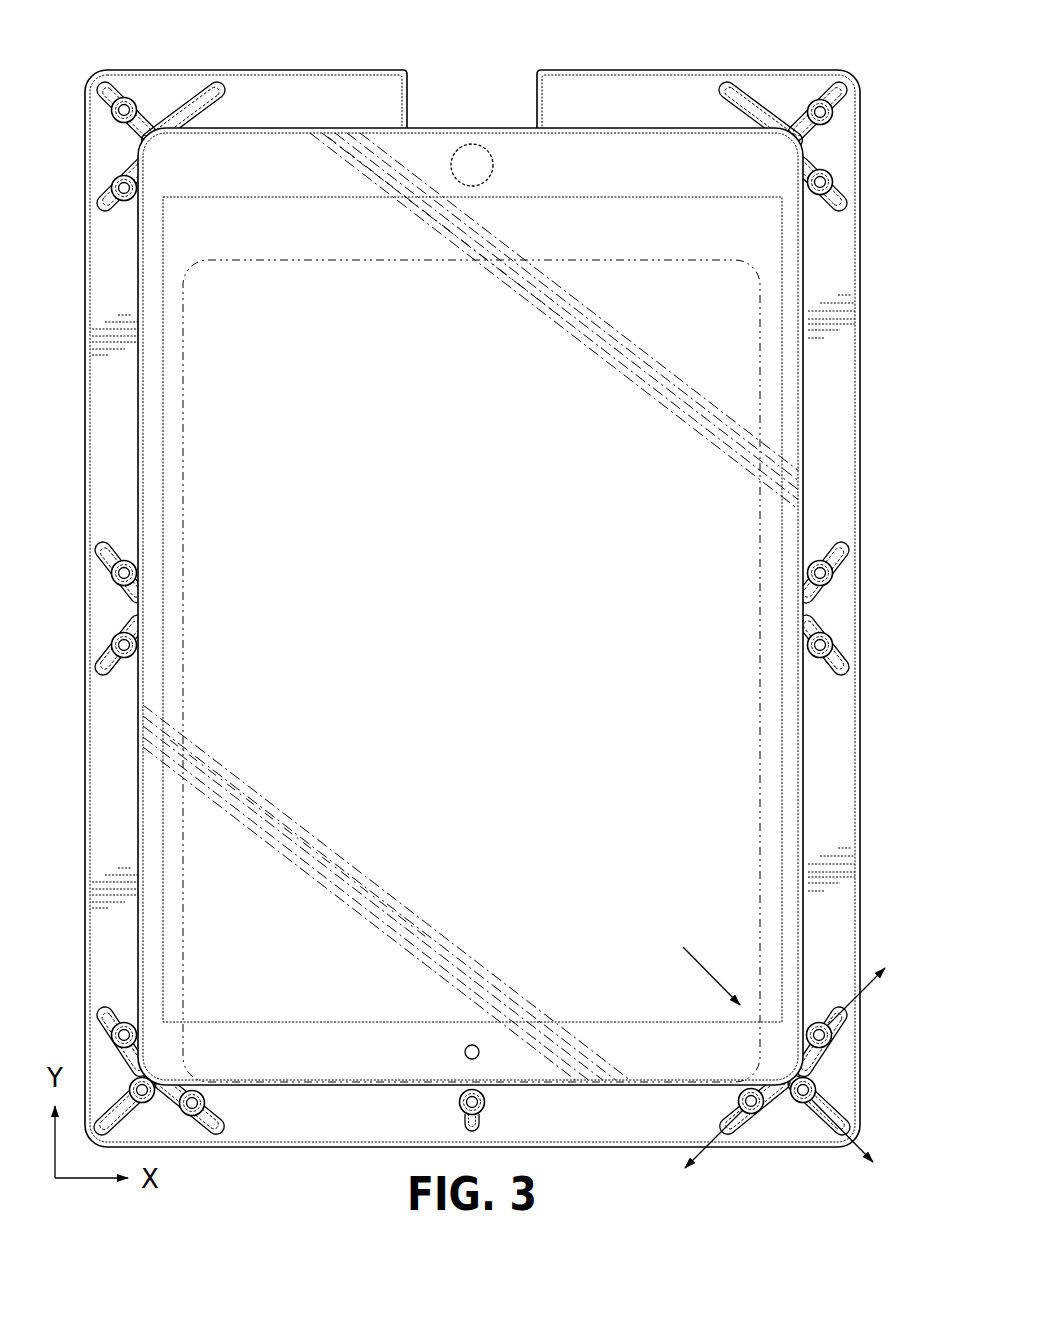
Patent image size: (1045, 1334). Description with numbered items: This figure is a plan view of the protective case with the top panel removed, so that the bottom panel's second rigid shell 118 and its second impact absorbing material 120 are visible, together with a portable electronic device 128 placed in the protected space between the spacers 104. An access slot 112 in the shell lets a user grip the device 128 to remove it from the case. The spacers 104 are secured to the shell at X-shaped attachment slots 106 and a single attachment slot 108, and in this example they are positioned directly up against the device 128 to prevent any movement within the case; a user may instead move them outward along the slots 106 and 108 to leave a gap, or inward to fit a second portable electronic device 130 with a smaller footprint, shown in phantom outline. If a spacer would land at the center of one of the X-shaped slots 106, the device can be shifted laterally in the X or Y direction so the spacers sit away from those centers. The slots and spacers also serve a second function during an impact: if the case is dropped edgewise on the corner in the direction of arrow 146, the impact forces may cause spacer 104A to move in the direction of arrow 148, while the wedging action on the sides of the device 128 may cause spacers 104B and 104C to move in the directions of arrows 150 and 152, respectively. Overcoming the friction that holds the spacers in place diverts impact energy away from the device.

The spacers 104 is at (833, 589).
The spacer 104A is at (820, 1083).
The spacer 104B is at (762, 1118).
The spacer 104C is at (836, 1043).
The X-shaped attachment slots 106 is at (838, 553).
The single attachment slot 108 is at (482, 1125).
The access slot 112 is at (470, 90).
The second rigid shell 118 is at (85, 292).
The second impact absorbing material 120 is at (103, 385).
The portable electronic device 128 is at (808, 410).
The second portable electronic device 130 is at (640, 262).
The arrow 146 is at (718, 968).
The arrow 148 is at (855, 1152).
The arrow 150 is at (703, 1158).
The arrow 152 is at (868, 990).